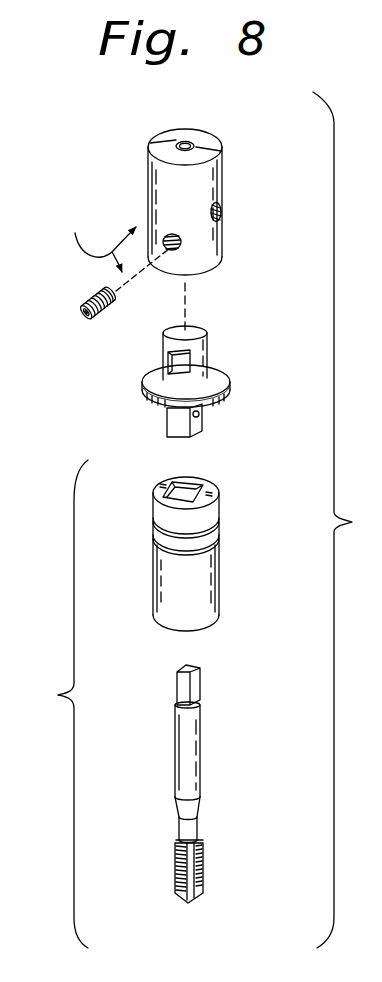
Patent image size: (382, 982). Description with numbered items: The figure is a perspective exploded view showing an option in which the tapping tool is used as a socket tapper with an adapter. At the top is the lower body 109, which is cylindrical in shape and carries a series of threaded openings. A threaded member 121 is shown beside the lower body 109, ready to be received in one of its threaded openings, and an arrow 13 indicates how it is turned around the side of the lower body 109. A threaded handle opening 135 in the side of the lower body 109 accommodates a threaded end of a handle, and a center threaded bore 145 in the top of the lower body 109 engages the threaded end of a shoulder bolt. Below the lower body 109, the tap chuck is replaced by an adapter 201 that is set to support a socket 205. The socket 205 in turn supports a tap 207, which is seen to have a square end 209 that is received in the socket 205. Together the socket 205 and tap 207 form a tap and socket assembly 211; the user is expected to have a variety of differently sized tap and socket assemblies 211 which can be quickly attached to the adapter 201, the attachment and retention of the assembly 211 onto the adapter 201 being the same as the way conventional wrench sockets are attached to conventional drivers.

The rotation direction arrow 13 is at (99, 239).
The lower body 109 is at (217, 169).
The threaded member 121 is at (80, 323).
The threaded handle opening 135 is at (221, 209).
The center threaded bore 145 is at (189, 142).
The adapter 201 is at (246, 369).
The socket 205 is at (238, 520).
The tap 207 is at (194, 784).
The square end 209 is at (177, 683).
The tap and socket assembly 211 is at (48, 704).